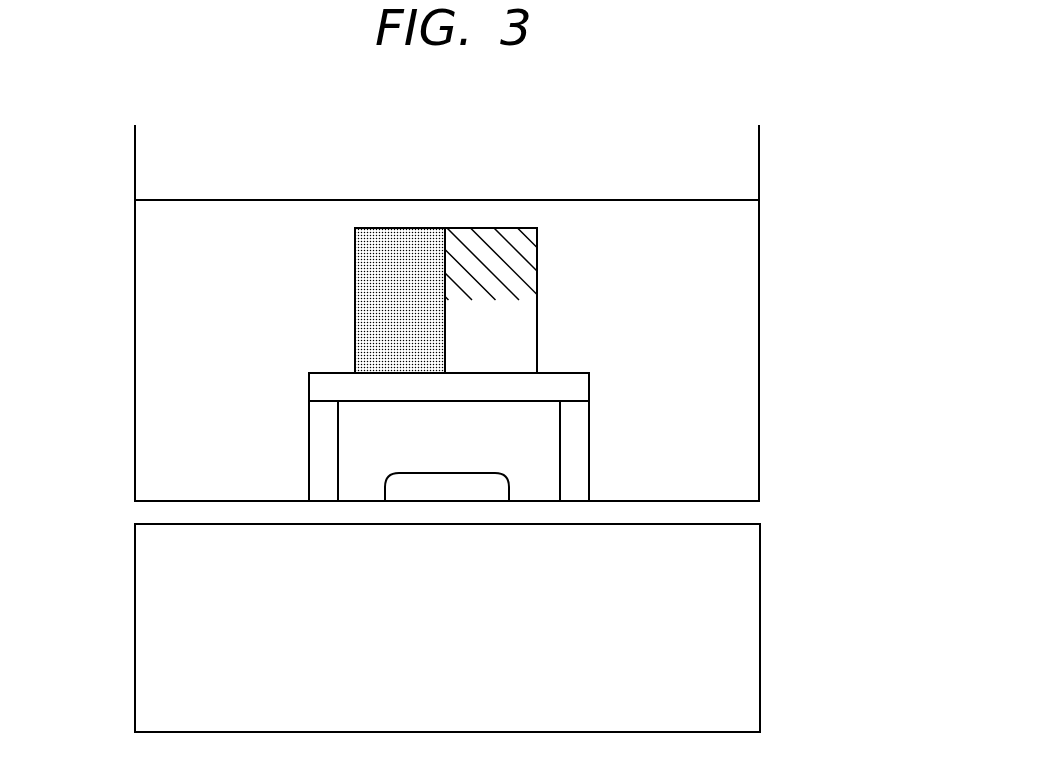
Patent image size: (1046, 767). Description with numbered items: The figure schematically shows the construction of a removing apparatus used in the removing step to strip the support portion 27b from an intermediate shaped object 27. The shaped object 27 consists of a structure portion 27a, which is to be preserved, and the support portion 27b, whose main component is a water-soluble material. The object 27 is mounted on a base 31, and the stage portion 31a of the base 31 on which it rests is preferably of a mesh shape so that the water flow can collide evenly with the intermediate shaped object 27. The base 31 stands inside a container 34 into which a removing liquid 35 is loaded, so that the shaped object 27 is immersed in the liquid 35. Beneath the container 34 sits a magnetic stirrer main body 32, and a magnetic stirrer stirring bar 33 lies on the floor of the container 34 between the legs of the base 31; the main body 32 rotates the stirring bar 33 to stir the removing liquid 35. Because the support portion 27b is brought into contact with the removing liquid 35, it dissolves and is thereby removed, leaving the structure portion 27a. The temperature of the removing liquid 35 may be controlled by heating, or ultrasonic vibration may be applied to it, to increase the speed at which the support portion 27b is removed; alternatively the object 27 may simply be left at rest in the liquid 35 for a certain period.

The intermediate shaped object 27 is at (360, 186).
The structure portion 27a is at (383, 283).
The support portion 27b is at (538, 257).
The base 31 is at (578, 424).
The stage portion 31a is at (590, 386).
The magnetic stirrer main body 32 is at (718, 636).
The magnetic stirrer stirring bar 33 is at (407, 489).
The container 34 is at (760, 265).
The removing liquid 35 is at (217, 237).